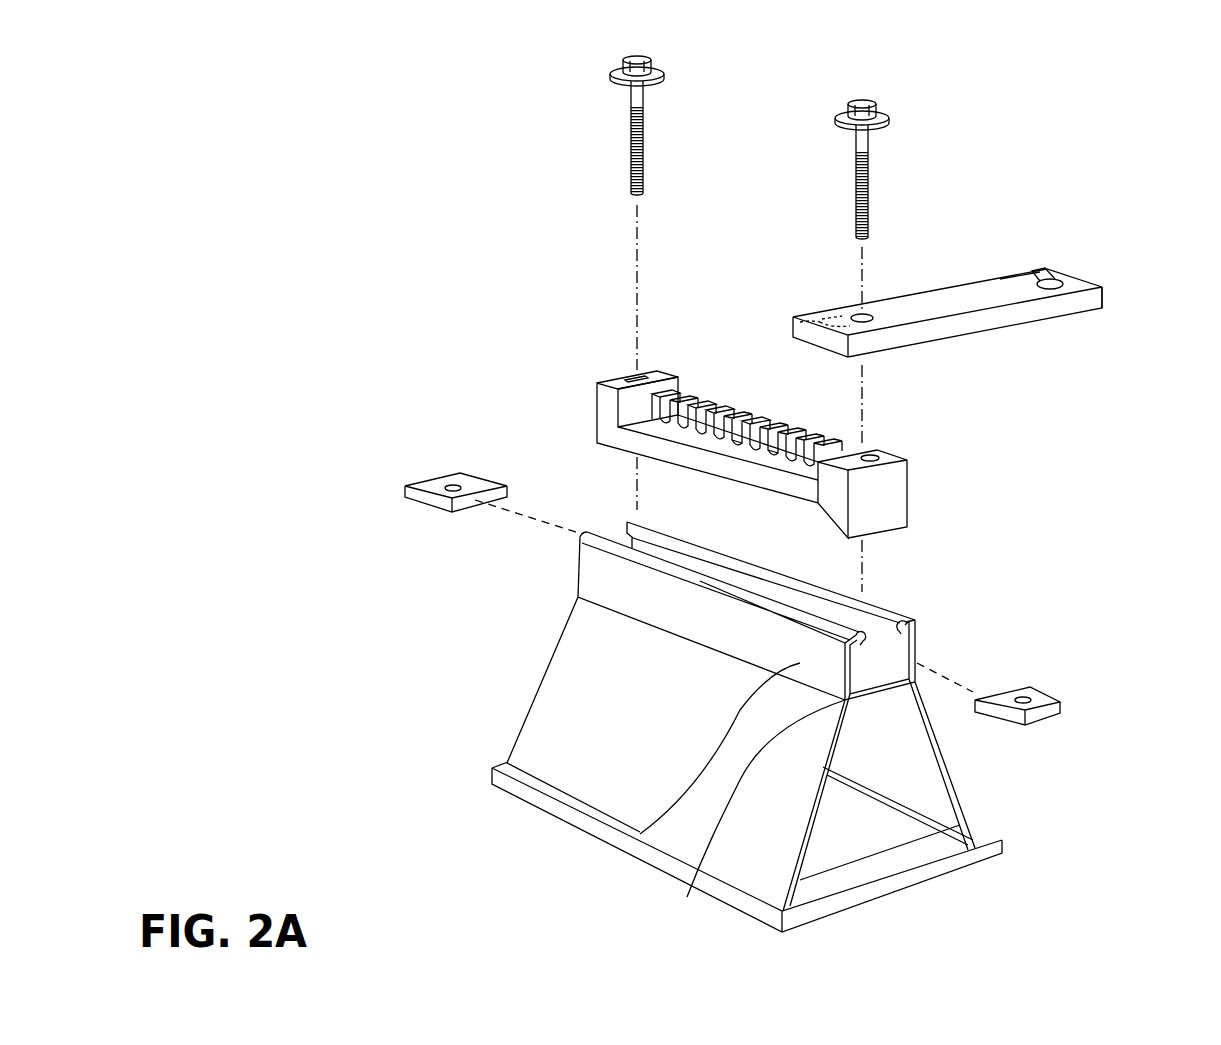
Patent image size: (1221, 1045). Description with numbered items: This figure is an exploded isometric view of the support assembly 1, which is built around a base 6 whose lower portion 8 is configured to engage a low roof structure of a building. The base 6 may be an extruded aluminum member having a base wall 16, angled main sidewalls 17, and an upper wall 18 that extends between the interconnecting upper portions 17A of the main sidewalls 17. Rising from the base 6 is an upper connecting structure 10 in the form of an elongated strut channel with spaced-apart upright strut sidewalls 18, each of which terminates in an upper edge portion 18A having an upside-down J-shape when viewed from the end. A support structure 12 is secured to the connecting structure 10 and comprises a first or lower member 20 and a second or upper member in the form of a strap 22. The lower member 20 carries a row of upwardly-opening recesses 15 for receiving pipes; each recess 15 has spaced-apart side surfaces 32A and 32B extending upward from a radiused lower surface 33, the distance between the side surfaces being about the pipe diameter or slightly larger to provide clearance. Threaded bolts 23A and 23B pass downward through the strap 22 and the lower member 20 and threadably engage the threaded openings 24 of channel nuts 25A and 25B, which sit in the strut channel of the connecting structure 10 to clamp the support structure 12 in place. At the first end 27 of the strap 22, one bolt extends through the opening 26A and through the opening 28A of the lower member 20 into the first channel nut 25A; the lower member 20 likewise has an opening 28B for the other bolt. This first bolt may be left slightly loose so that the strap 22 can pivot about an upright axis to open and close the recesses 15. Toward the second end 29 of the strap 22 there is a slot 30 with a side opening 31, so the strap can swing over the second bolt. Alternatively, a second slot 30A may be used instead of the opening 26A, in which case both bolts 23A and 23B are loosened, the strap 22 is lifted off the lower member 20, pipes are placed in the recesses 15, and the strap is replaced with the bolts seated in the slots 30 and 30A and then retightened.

The support assembly 1 is at (1056, 498).
The base 6 is at (980, 812).
The lower portion 8 is at (922, 881).
The upper connecting structure 10 is at (925, 654).
The support structure 12 is at (990, 352).
The upwardly-opening recesses 15 is at (712, 398).
The base wall 16 is at (840, 867).
The angled main sidewalls 17 is at (962, 790).
The upper portions of main sidewalls 17A is at (918, 680).
The upright strut sidewalls 18 is at (920, 643).
The upper edge portion 18A is at (864, 630).
The lower member 20 is at (915, 466).
The strap 22 is at (966, 282).
The bolt 23A is at (864, 106).
The bolt 23B is at (640, 60).
The threaded opening 24 is at (455, 484).
The first channel nut 25A is at (1062, 698).
The nut plate 25B is at (425, 486).
The opening 26A is at (868, 314).
The first end of strap 27 is at (828, 303).
The opening of lower member 28A is at (875, 460).
The end block of comb 28B is at (626, 378).
The end of clamp bar 29 is at (1106, 298).
The slot 30 is at (1056, 282).
The second slot 30A is at (800, 318).
The side opening 31 is at (1016, 276).
The side surface 32A is at (734, 404).
The side surface 32B is at (769, 412).
The radiused lower surface 33 is at (706, 434).